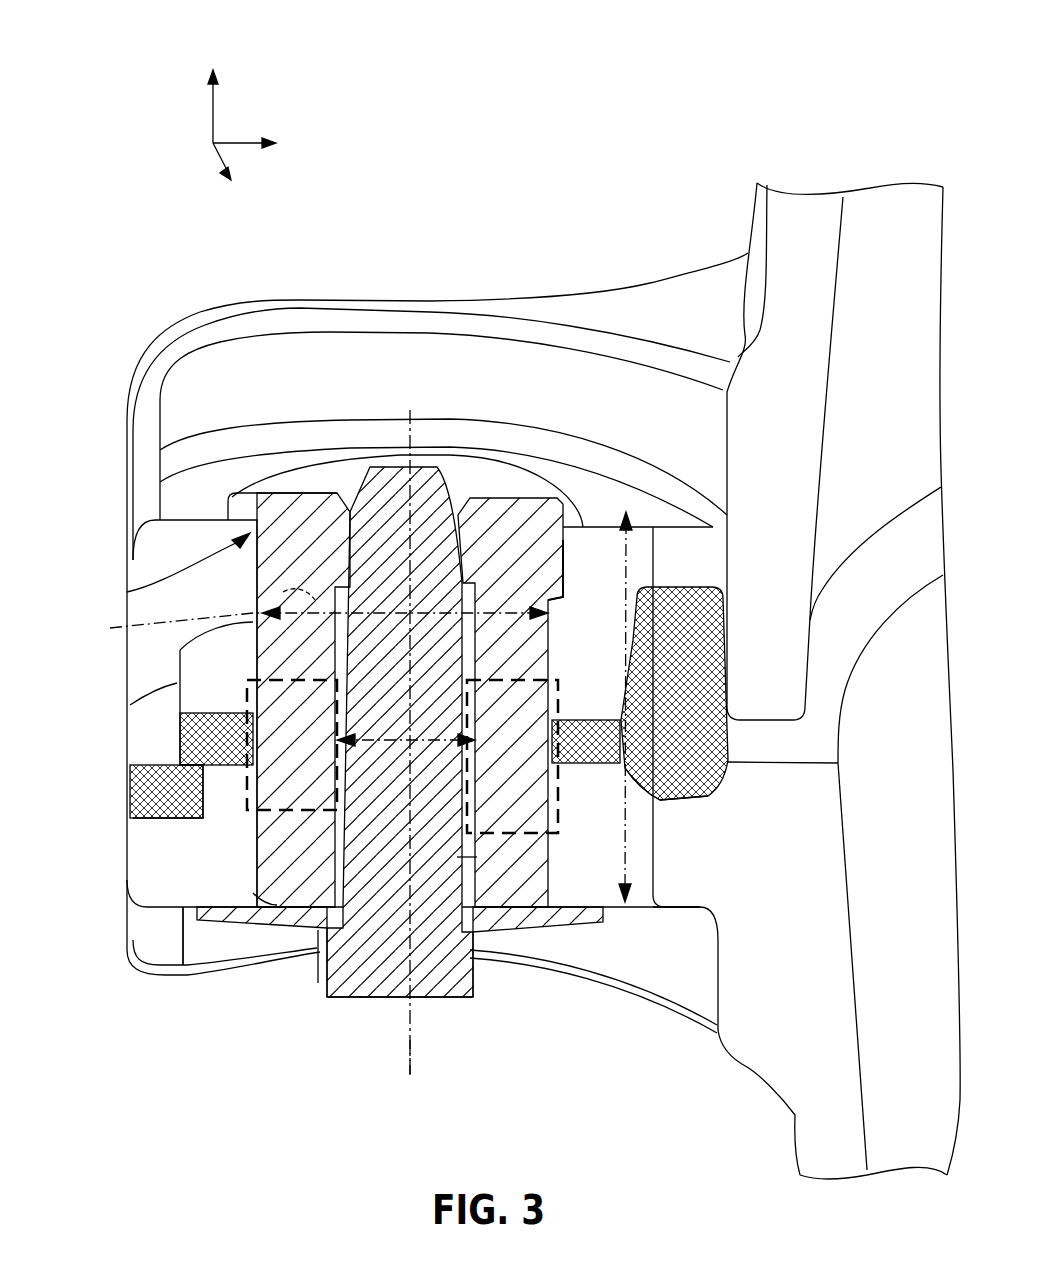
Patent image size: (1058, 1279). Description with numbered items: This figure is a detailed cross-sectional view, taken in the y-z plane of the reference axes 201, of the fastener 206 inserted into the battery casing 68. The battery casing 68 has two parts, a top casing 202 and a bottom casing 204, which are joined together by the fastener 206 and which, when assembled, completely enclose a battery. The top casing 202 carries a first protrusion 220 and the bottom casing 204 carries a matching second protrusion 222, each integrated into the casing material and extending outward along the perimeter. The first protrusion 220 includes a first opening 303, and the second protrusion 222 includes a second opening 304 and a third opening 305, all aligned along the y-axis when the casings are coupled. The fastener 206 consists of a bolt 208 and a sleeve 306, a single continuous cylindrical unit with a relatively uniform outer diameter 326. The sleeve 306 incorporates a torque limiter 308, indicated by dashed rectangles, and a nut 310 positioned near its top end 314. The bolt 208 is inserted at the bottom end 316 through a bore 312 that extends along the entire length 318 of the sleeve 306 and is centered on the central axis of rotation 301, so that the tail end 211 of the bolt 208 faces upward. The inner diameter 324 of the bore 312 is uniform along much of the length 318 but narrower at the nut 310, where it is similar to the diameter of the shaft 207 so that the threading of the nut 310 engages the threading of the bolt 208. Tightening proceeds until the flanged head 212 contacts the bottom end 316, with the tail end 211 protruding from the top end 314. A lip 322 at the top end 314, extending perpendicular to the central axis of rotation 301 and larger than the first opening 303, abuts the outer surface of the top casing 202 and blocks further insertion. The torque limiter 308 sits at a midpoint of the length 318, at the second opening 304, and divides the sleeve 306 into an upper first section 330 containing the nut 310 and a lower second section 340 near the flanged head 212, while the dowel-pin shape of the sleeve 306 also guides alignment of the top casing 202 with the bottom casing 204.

The battery casing 68 is at (106, 254).
The reference axes 201 is at (270, 75).
The top casing 202 is at (652, 302).
The bottom casing 204 is at (673, 1002).
The fastener 206 is at (347, 1040).
The shaft 207 is at (457, 857).
The bolt 208 is at (355, 998).
The tail end 211 is at (368, 468).
The flanged head 212 is at (272, 912).
The first protrusion 220 is at (272, 306).
The second protrusion 222 is at (520, 962).
The central axis of rotation 301 is at (415, 1043).
The first opening 303 is at (127, 592).
The second opening 304 is at (243, 763).
The third opening 305 is at (566, 906).
The sleeve 306 is at (542, 470).
The torque limiter 308 is at (246, 691).
The nut 310 is at (566, 552).
The bore 312 is at (478, 780).
The top end 314 is at (428, 448).
The bottom end 316 is at (294, 912).
The length 318 is at (625, 903).
The lip 322 is at (267, 515).
The inner diameter 324 is at (340, 715).
The outer diameter 326 is at (310, 615).
The first section 330 is at (658, 604).
The second section 340 is at (660, 792).